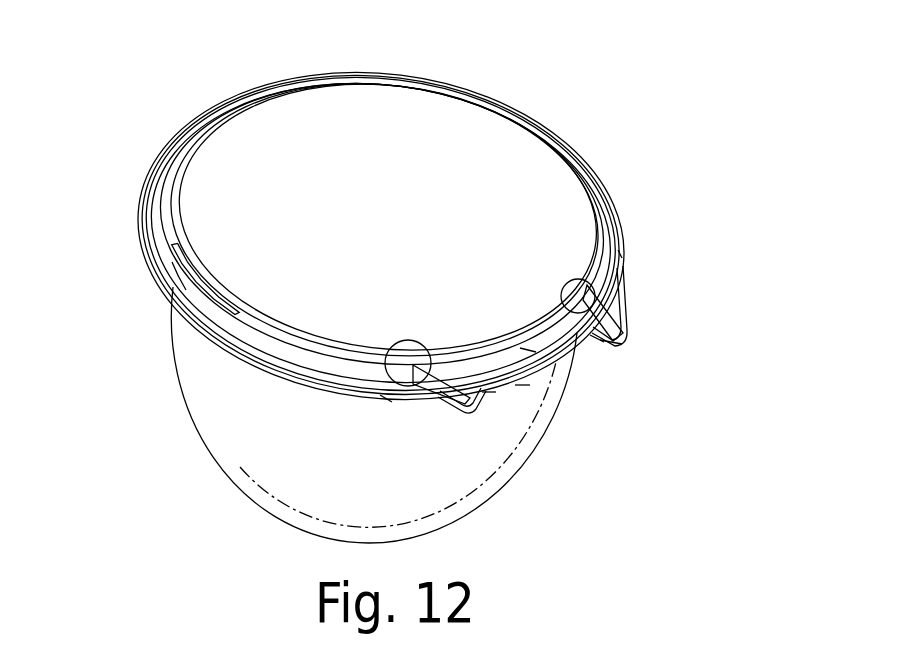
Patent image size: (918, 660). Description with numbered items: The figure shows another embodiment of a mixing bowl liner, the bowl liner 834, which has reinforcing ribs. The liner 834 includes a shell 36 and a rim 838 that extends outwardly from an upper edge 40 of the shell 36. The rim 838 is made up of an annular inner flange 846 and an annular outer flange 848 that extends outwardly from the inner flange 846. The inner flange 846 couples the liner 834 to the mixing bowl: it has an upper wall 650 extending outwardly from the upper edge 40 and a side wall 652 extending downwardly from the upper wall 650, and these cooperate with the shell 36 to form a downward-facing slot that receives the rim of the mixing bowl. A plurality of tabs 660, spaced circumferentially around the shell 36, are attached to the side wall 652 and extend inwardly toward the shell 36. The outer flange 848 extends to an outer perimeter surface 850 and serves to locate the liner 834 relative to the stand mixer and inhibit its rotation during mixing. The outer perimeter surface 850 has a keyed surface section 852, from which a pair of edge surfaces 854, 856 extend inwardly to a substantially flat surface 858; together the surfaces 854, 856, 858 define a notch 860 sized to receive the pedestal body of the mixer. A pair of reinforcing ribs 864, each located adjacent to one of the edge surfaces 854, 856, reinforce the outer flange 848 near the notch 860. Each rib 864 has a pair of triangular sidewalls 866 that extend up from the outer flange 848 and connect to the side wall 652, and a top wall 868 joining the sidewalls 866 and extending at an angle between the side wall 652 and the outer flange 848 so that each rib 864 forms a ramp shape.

The shell 36 is at (230, 458).
The upper edge 40 is at (172, 160).
The bowl liner 834 is at (614, 95).
The rim 838 is at (177, 138).
The annular inner flange 846 is at (151, 192).
The annular outer flange 848 is at (158, 298).
The upper wall 650 is at (171, 222).
The side wall 652 is at (176, 280).
The tabs 660 is at (206, 303).
The outer perimeter surface 850 is at (292, 380).
The keyed surface section 852 is at (626, 346).
The edge surface 854 is at (489, 395).
The edge surface 856 is at (597, 346).
The flat surface 858 is at (528, 350).
The notch 860 is at (524, 392).
The reinforcing ribs 864 is at (419, 395).
The triangular sidewalls 866 is at (438, 395).
The top wall 868 is at (389, 401).